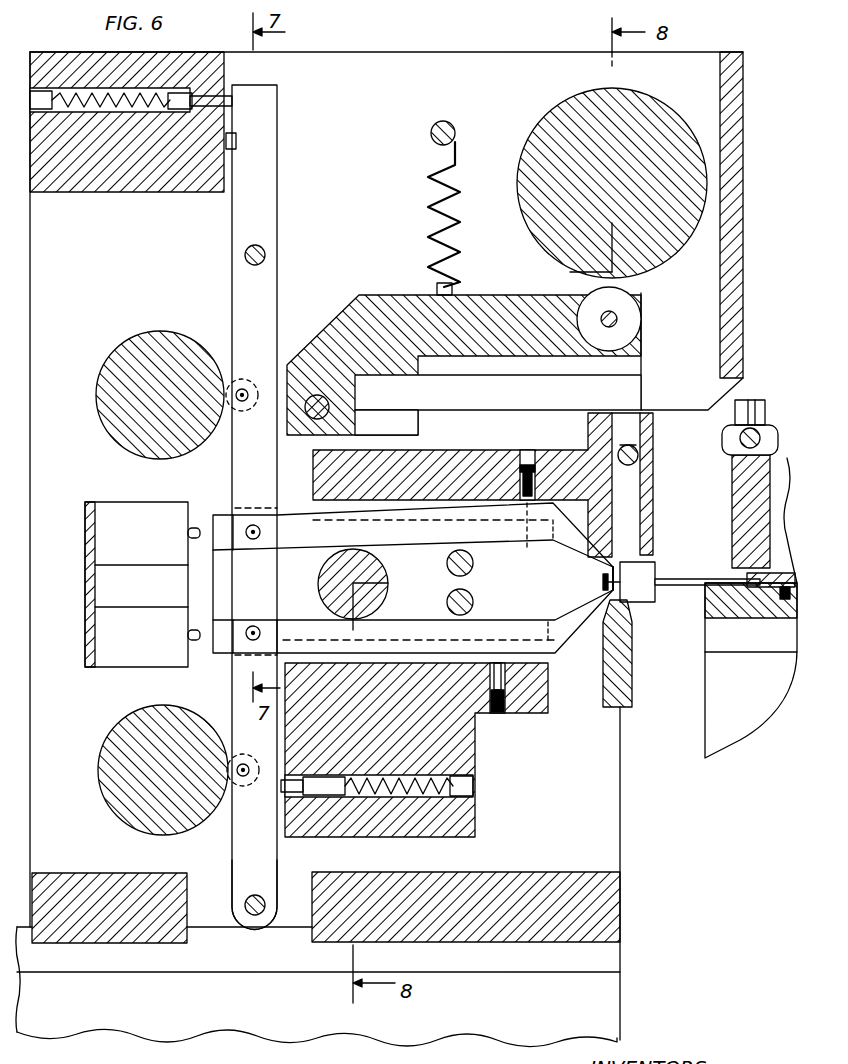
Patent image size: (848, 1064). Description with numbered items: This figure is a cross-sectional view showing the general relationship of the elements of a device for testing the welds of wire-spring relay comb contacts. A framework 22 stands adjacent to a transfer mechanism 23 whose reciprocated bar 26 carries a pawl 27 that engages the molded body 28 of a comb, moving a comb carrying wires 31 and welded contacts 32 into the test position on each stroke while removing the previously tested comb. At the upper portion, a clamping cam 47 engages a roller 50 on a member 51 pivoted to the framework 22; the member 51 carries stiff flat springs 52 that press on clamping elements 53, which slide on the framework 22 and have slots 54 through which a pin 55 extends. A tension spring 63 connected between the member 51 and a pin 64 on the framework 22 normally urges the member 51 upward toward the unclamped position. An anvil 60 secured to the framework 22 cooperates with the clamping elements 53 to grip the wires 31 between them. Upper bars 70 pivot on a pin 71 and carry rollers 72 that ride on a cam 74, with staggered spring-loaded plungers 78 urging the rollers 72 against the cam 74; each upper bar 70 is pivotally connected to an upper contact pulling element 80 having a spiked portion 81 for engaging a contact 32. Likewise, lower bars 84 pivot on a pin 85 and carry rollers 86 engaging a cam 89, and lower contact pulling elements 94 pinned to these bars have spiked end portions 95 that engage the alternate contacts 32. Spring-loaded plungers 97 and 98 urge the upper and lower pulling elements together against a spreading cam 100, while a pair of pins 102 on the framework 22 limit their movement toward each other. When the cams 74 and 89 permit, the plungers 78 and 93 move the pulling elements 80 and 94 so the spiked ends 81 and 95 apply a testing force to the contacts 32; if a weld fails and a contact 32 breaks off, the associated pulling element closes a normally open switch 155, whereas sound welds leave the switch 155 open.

The framework 22 is at (620, 853).
The transfer mechanism 23 is at (708, 644).
The reciprocated bar 26 is at (745, 502).
The pawl 27 is at (765, 570).
The molded body 28 is at (775, 587).
The wires 31 is at (678, 582).
The contacts 32 is at (600, 583).
The clamping cam 47 is at (648, 135).
The roller 50 is at (630, 326).
The member 51 is at (362, 320).
The stiff flat springs 52 is at (615, 397).
The clamping elements 53 is at (620, 512).
The slots 54 is at (634, 445).
The pin 55 is at (638, 458).
The anvil 60 is at (618, 642).
The tension spring 63 is at (435, 202).
The pin 64 is at (432, 134).
The upper bars 70 is at (244, 216).
The pin 71 is at (265, 255).
The rollers 72 is at (228, 382).
The cam 74 is at (160, 356).
The spring-loaded plungers 78 is at (235, 97).
The upper contact pulling element 80 is at (297, 535).
The spiked portion 81 is at (612, 567).
The lower bars 84 is at (244, 853).
The pin 85 is at (265, 905).
The rollers 86 is at (228, 762).
The cam 89 is at (120, 785).
The spring-loaded plunger 93 is at (282, 767).
The lower contact pulling elements 94 is at (304, 628).
The spiked end portions 95 is at (608, 592).
The spring-loaded plunger 97 is at (512, 502).
The spring-loaded plunger 98 is at (508, 658).
The spreading cam 100 is at (334, 585).
The pins 102 is at (449, 566).
The normally open switch 155 is at (154, 548).